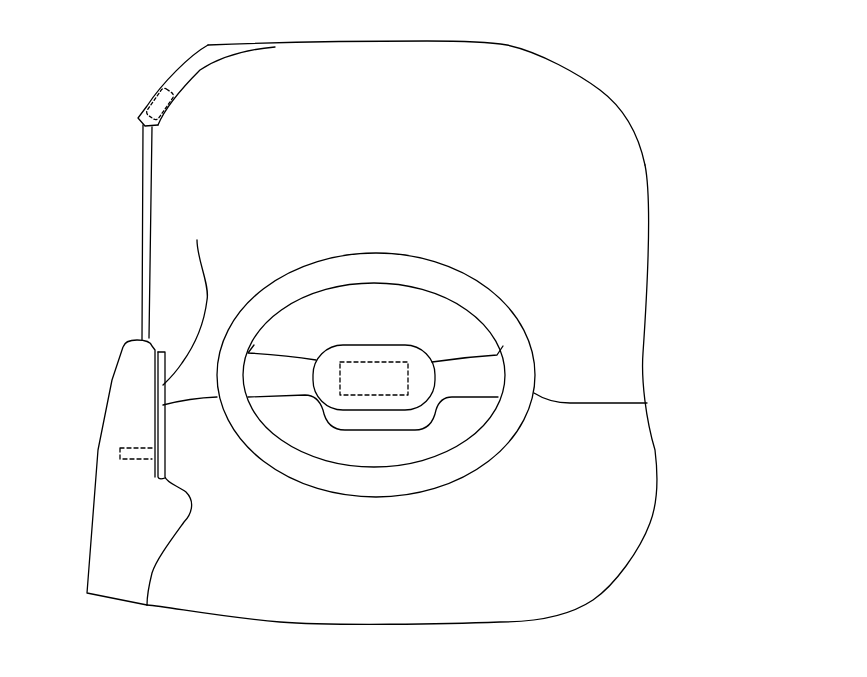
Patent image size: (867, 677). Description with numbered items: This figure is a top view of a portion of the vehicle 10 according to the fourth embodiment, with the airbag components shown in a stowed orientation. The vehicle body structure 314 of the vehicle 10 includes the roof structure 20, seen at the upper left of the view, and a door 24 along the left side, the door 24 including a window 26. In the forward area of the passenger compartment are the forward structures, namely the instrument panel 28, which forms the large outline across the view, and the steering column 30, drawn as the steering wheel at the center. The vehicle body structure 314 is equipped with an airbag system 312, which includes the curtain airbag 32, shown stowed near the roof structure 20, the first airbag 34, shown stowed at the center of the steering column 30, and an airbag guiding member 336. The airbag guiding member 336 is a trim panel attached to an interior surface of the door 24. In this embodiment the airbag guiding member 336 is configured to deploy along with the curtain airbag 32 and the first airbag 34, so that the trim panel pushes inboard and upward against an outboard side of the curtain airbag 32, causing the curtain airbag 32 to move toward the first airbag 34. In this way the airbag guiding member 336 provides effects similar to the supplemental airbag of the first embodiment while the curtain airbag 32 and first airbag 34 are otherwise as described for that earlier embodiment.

The vehicle 10 is at (637, 49).
The roof structure 20 is at (188, 73).
The door 24 is at (122, 428).
The window 26 is at (142, 243).
The instrument panel 28 is at (613, 347).
The steering column 30 is at (473, 300).
The curtain airbag 32 is at (163, 108).
The first airbag 34 is at (357, 372).
The airbag system 312 is at (262, 253).
The vehicle body structure 314 is at (511, 45).
The airbag guiding member 336 is at (197, 240).